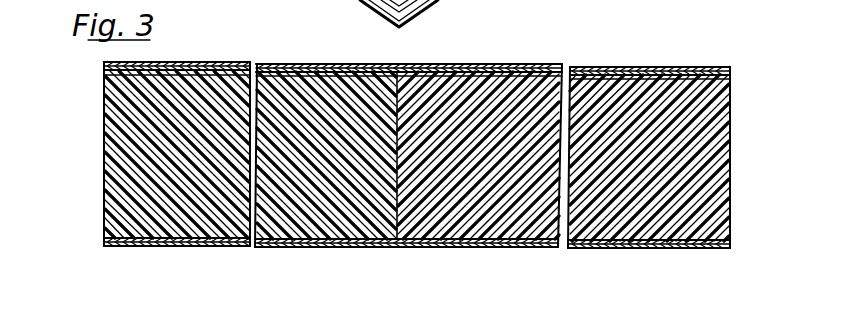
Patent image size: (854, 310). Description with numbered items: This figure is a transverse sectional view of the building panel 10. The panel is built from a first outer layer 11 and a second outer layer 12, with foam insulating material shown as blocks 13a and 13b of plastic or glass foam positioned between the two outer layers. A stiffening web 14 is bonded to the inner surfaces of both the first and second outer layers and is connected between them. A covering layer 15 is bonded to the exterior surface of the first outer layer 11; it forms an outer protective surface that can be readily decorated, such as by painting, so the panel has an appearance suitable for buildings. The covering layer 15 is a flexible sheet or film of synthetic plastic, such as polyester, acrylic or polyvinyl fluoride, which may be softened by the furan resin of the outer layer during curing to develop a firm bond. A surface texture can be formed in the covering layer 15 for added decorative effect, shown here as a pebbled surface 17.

The building panel 10 is at (89, 94).
The first outer layer 11 is at (712, 79).
The second outer layer 12 is at (232, 243).
The block of foam insulating material 13a is at (120, 142).
The block of foam insulating material 13b is at (680, 166).
The stiffening web 14 is at (396, 153).
The covering layer 15 is at (712, 68).
The pebbled surface 17 is at (634, 67).